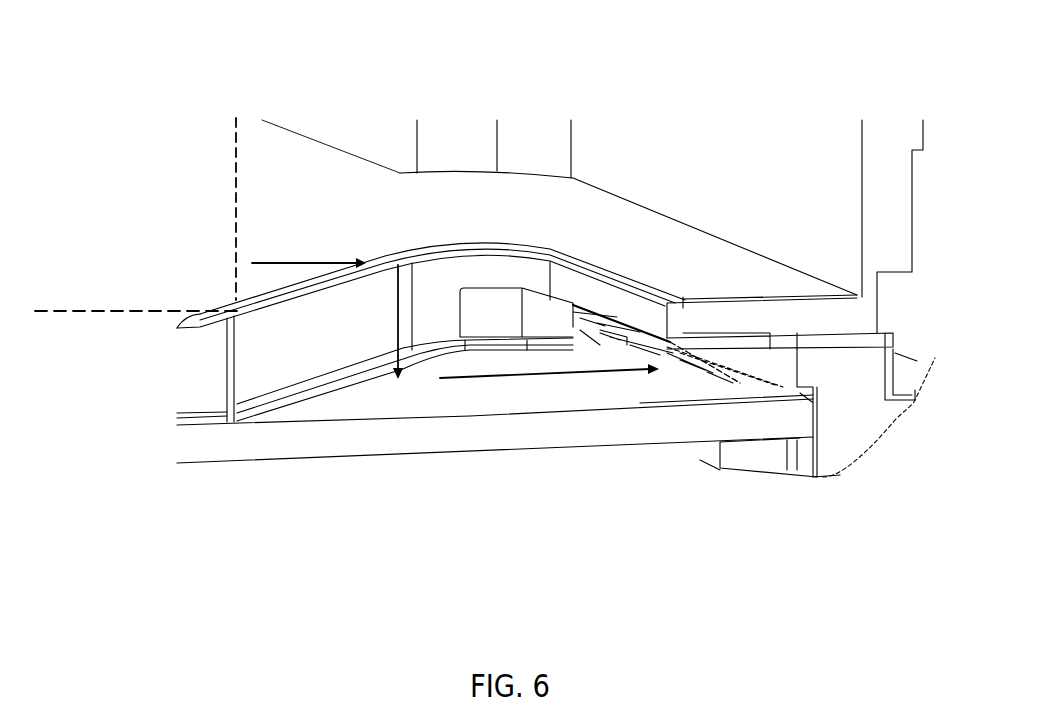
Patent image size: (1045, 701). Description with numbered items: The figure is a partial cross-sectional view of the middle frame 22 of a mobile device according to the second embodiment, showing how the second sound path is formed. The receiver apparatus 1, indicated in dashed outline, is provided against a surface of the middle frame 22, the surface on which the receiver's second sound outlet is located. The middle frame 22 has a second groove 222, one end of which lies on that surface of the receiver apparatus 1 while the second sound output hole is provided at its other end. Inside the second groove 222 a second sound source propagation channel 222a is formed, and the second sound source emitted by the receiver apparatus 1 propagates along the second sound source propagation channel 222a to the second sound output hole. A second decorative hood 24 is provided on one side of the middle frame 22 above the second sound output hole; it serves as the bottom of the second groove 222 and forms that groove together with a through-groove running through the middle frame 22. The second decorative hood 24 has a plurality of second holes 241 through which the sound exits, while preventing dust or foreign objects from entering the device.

The receiver apparatus 1 is at (236, 148).
The middle frame 22 is at (635, 227).
The second groove 222 is at (385, 262).
The second sound source propagation channel 222a is at (440, 388).
The second decorative hood 24 is at (602, 430).
The second holes 241 is at (717, 378).